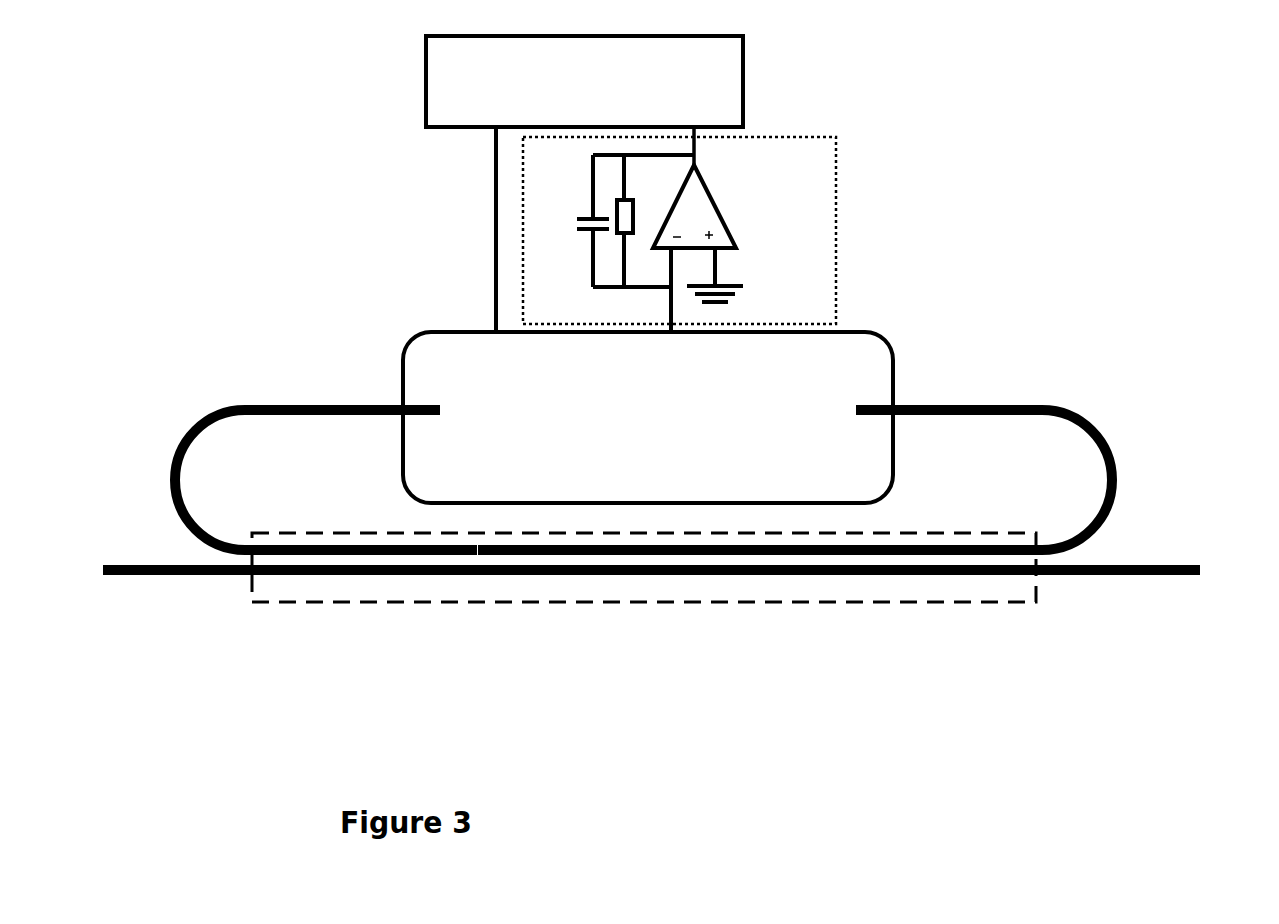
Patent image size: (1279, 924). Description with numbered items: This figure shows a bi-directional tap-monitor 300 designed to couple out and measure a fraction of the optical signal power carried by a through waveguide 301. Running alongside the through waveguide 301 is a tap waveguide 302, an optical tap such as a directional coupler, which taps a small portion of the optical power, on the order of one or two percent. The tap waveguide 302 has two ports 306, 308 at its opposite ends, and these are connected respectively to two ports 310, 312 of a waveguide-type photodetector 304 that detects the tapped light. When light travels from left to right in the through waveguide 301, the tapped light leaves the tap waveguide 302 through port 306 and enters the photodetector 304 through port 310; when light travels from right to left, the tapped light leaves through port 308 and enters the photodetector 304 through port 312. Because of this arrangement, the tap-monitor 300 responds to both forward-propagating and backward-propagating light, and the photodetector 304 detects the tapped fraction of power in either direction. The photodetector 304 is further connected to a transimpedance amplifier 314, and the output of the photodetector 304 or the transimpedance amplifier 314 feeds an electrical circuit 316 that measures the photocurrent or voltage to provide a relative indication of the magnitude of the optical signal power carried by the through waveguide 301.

The bi-directional tap-monitor 300 is at (1077, 169).
The through waveguide 301 is at (180, 576).
The tap waveguide 302 is at (357, 550).
The waveguide-type photodetector 304 is at (648, 417).
The port of tap waveguide 306 is at (1107, 523).
The port of tap waveguide 308 is at (205, 546).
The port of photodetector 310 is at (893, 405).
The port of photodetector 312 is at (403, 403).
The transimpedance amplifier 314 is at (836, 172).
The electrical circuit 316 is at (584, 81).